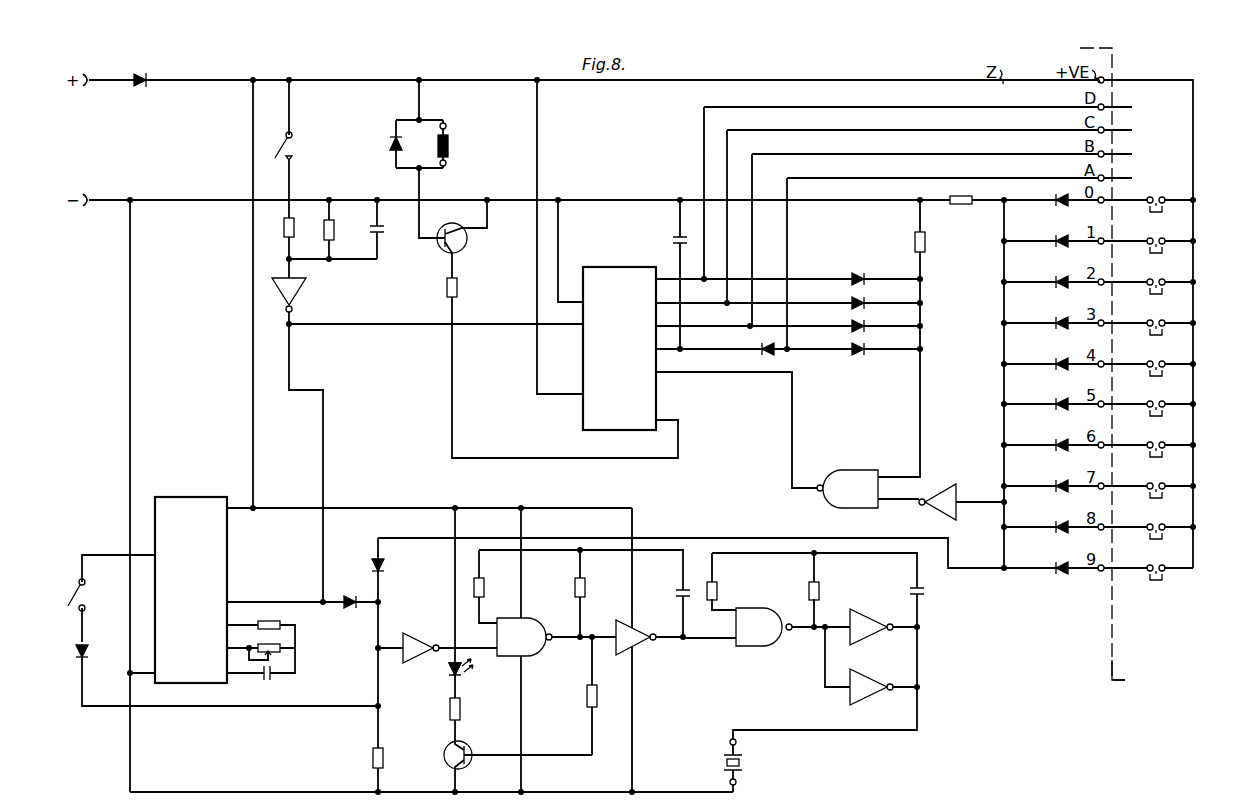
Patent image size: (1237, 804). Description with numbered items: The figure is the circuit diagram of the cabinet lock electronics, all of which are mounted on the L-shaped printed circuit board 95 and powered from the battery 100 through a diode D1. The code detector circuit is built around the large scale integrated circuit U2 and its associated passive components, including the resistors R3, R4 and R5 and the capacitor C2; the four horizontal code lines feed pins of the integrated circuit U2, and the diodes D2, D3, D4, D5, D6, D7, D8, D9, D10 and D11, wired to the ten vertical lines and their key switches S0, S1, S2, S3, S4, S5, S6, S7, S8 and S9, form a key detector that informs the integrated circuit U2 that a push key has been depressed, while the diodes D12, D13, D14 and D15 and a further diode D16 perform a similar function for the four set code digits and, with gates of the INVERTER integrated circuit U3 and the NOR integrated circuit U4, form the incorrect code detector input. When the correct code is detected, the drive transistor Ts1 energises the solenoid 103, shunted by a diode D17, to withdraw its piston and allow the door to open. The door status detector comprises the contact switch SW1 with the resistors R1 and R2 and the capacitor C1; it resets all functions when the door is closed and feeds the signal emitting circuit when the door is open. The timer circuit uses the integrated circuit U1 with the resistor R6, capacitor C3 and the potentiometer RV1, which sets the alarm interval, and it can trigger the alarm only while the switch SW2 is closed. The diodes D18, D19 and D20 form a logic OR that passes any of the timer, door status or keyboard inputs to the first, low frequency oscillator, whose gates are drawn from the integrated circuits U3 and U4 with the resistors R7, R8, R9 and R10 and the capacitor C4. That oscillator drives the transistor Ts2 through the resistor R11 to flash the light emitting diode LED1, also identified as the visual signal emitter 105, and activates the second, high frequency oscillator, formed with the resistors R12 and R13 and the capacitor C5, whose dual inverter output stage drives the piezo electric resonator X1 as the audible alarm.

The battery 100 is at (89, 140).
The solenoid 103 is at (448, 140).
The light emitting diode 105 is at (449, 673).
The printed circuit board 95 is at (1127, 676).
The diode D1 is at (140, 77).
The switch SW1 is at (293, 153).
The diode D17 is at (390, 143).
The resistor R1 is at (284, 236).
The resistor R2 is at (335, 232).
The capacitor C1 is at (381, 236).
The drive transistor Ts1 is at (466, 247).
The resistor R5 is at (447, 288).
The integrated circuit U2 is at (630, 274).
The capacitor C2 is at (673, 242).
The resistor R4 is at (915, 242).
The resistor R3 is at (958, 206).
The diode D12 is at (854, 275).
The diode D13 is at (854, 300).
The diode D14 is at (854, 323).
The diode D15 is at (854, 346).
The diode D16 is at (768, 356).
The INVERTER integrated circuit U3 is at (824, 415).
The NOR integrated circuit U4 is at (326, 293).
The diode D2 is at (1058, 207).
The diode D3 is at (1058, 248).
The diode D4 is at (1058, 289).
The diode D5 is at (1058, 330).
The diode D6 is at (1058, 371).
The diode D7 is at (1058, 411).
The diode D8 is at (1058, 452).
The diode D9 is at (1058, 493).
The diode D10 is at (1060, 534).
The diode D11 is at (1060, 575).
The switch S0 is at (1156, 195).
The switch S1 is at (1156, 236).
The switch S2 is at (1156, 277).
The switch S3 is at (1156, 318).
The switch S4 is at (1156, 359).
The switch S5 is at (1156, 399).
The switch S6 is at (1156, 440).
The switch S7 is at (1156, 481).
The switch S8 is at (1156, 522).
The switch S9 is at (1156, 563).
The integrated circuit U1 is at (188, 501).
The switch SW2 is at (78, 578).
The diode D18 is at (94, 644).
The resistor R6 is at (272, 620).
The potentiometer RV1 is at (274, 656).
The capacitor C3 is at (274, 680).
The diode D19 is at (362, 592).
The diode D20 is at (386, 566).
The light emitting diode LED1 is at (467, 677).
The resistor R11 is at (461, 710).
The transistor Ts2 is at (450, 753).
The resistor R7 is at (373, 758).
The resistor R8 is at (484, 585).
The resistor R9 is at (585, 585).
The resistor R10 is at (586, 700).
The capacitor C4 is at (680, 586).
The resistor R12 is at (717, 590).
The resistor R13 is at (819, 590).
The capacitor C5 is at (922, 594).
The piezo electric resonator X1 is at (745, 762).